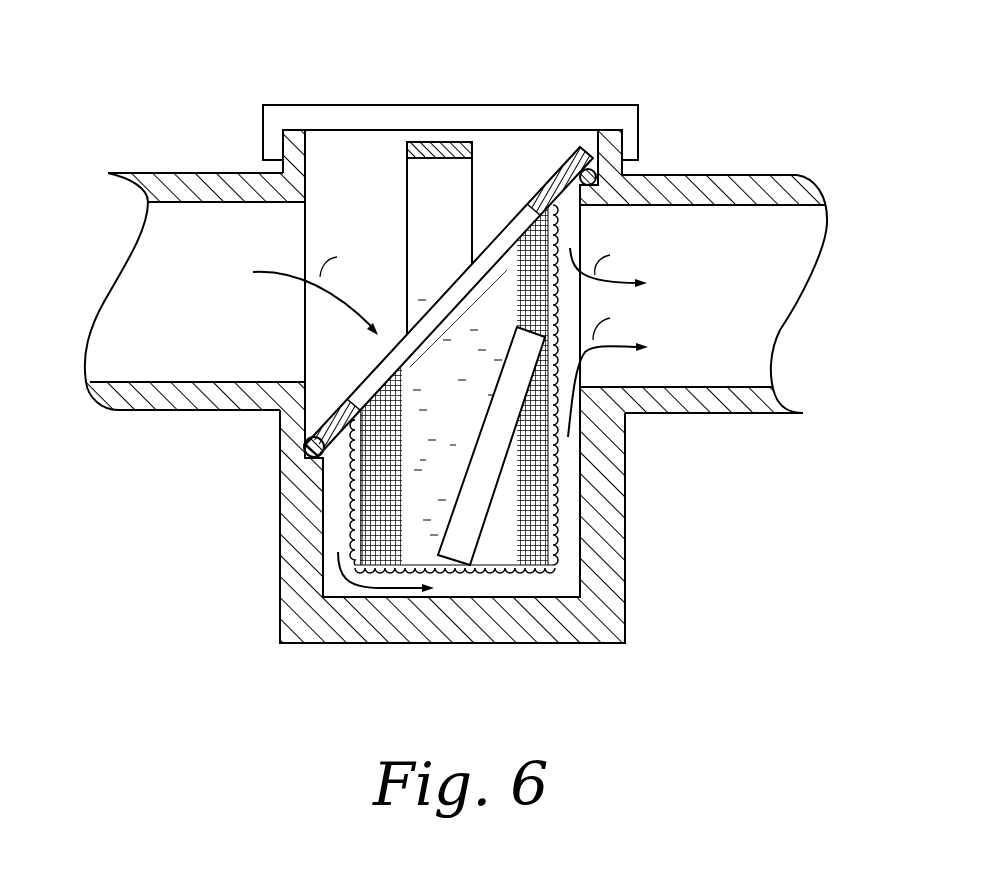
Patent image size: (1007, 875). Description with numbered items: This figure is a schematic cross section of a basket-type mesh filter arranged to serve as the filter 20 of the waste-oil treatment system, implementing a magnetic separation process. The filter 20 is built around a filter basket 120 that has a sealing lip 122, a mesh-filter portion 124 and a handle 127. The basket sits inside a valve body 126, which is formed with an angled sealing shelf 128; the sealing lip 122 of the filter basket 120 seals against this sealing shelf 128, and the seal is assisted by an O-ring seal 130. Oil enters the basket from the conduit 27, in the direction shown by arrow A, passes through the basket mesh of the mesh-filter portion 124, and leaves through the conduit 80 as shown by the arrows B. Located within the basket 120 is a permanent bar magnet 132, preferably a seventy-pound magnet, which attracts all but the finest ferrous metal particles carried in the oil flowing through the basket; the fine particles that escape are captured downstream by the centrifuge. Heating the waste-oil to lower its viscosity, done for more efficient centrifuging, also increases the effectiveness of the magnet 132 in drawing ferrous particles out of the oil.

The filter 20 is at (461, 359).
The conduit 27 is at (183, 322).
The conduit 80 is at (742, 283).
The filter basket 120 is at (530, 359).
The sealing lip 122 is at (583, 157).
The mesh-filter portion 124 is at (510, 523).
The valve body 126 is at (634, 528).
The handle 127 is at (407, 197).
The angled sealing shelf 128 is at (568, 218).
The O-ring seal 130 is at (597, 180).
The permanent bar magnet 132 is at (462, 535).